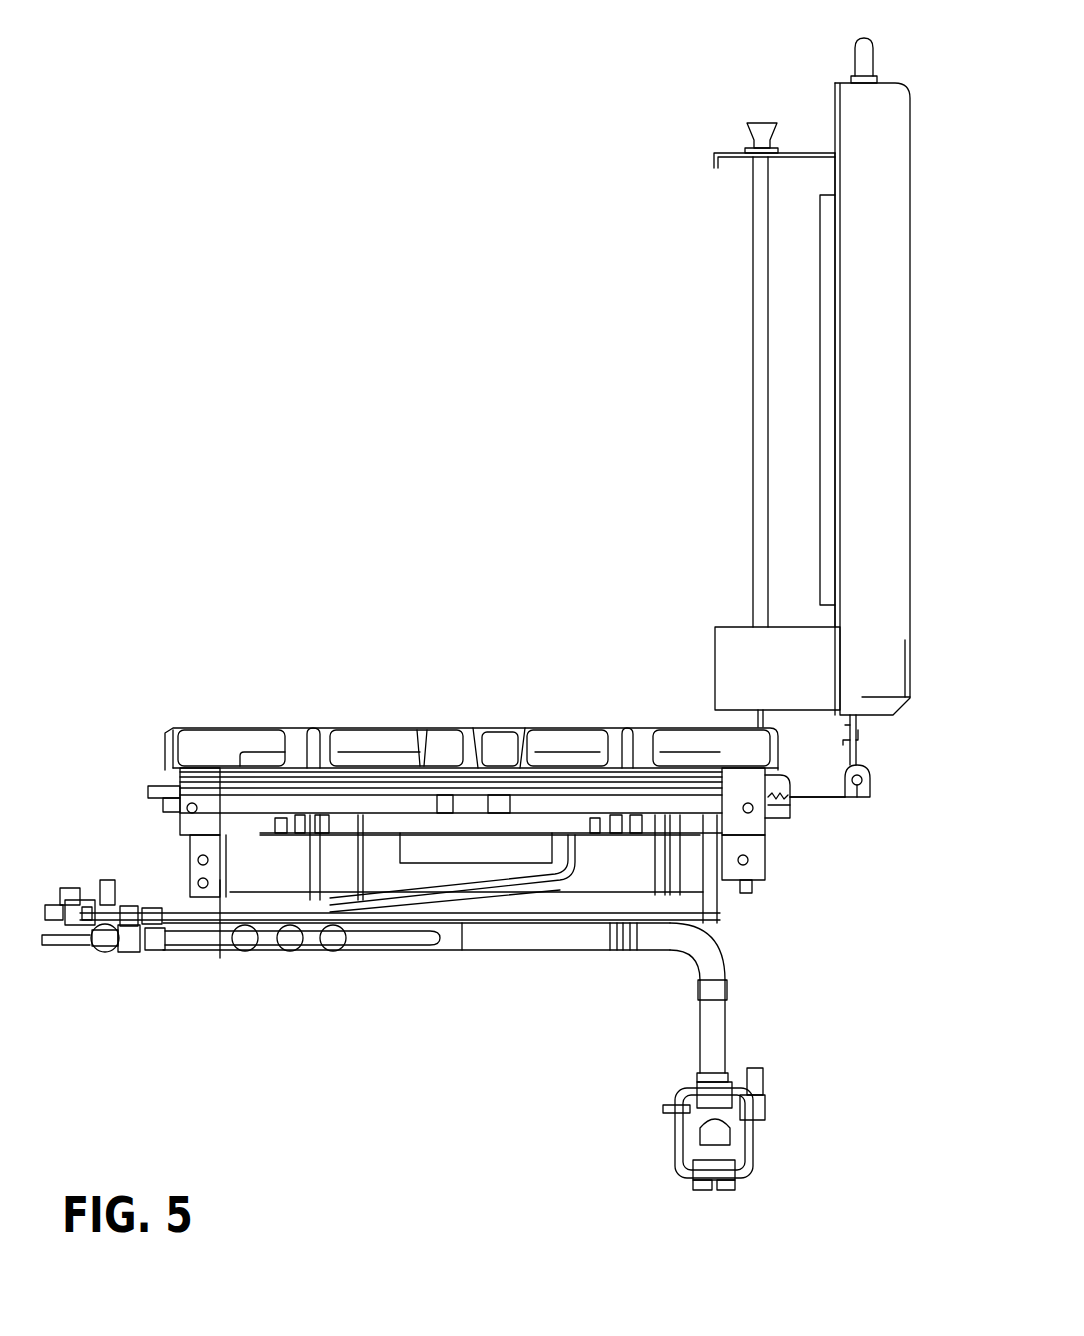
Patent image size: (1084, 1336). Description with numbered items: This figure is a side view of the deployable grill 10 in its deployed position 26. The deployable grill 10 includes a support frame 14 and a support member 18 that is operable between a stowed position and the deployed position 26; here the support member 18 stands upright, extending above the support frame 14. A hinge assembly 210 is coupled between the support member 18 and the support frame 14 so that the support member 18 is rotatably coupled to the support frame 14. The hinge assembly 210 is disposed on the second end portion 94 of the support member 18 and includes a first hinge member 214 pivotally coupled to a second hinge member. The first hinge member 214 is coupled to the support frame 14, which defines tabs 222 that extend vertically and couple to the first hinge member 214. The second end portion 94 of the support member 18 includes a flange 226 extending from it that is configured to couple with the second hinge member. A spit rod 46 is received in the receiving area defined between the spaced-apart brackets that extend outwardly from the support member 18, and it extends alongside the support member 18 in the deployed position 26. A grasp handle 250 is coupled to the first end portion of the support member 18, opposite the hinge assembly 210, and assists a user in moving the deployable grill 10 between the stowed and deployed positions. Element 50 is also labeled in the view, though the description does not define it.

The deployable grill 10 is at (566, 252).
The support frame 14 is at (800, 800).
The support member 18 is at (877, 235).
The deployed position 26 is at (886, 786).
The spit rod 46 is at (760, 218).
The grate tray 50 is at (200, 782).
The second end portion 94 is at (885, 690).
The hinge assembly 210 is at (836, 818).
The first hinge member 214 is at (868, 780).
The tabs 222 is at (857, 790).
The flange 226 is at (858, 722).
The grasp handle 250 is at (858, 58).